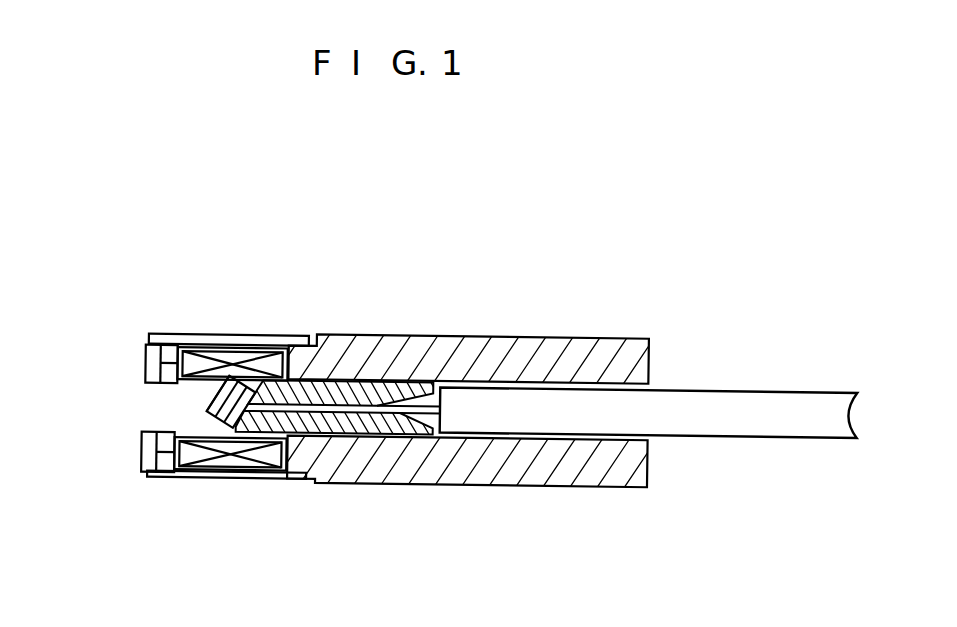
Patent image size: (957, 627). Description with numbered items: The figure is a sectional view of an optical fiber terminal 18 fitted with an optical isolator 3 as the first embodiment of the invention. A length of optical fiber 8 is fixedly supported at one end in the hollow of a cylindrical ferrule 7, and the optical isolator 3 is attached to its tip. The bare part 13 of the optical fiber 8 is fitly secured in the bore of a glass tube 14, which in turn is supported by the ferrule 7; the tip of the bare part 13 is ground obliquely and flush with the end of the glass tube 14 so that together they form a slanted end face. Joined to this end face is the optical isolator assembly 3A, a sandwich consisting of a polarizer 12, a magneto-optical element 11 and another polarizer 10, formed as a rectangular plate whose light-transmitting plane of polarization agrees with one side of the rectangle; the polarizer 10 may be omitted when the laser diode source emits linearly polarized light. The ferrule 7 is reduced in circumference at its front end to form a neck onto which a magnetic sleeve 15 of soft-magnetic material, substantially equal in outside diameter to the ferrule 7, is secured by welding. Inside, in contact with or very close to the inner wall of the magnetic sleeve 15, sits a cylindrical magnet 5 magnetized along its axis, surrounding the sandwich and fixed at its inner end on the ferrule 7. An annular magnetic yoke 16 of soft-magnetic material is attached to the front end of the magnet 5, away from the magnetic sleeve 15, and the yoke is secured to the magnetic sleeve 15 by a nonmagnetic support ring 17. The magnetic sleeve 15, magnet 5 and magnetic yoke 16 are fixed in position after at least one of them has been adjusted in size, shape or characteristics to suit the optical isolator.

The optical isolator 3 is at (158, 494).
The optical isolator assembly 3A is at (198, 402).
The cylindrical magnet 5 is at (236, 358).
The cylindrical ferrule 7 is at (553, 352).
The optical fiber 8 is at (765, 392).
The polarizer 10 is at (208, 418).
The magneto-optical element 11 is at (218, 428).
The polarizer 12 is at (238, 430).
The bare part of the optical fiber 13 is at (358, 390).
The glass tube 14 is at (384, 425).
The magnetic sleeve 15 is at (167, 340).
The annular magnetic yoke 16 is at (163, 366).
The nonmagnetic support ring 17 is at (150, 453).
The optical fiber terminal 18 is at (616, 598).